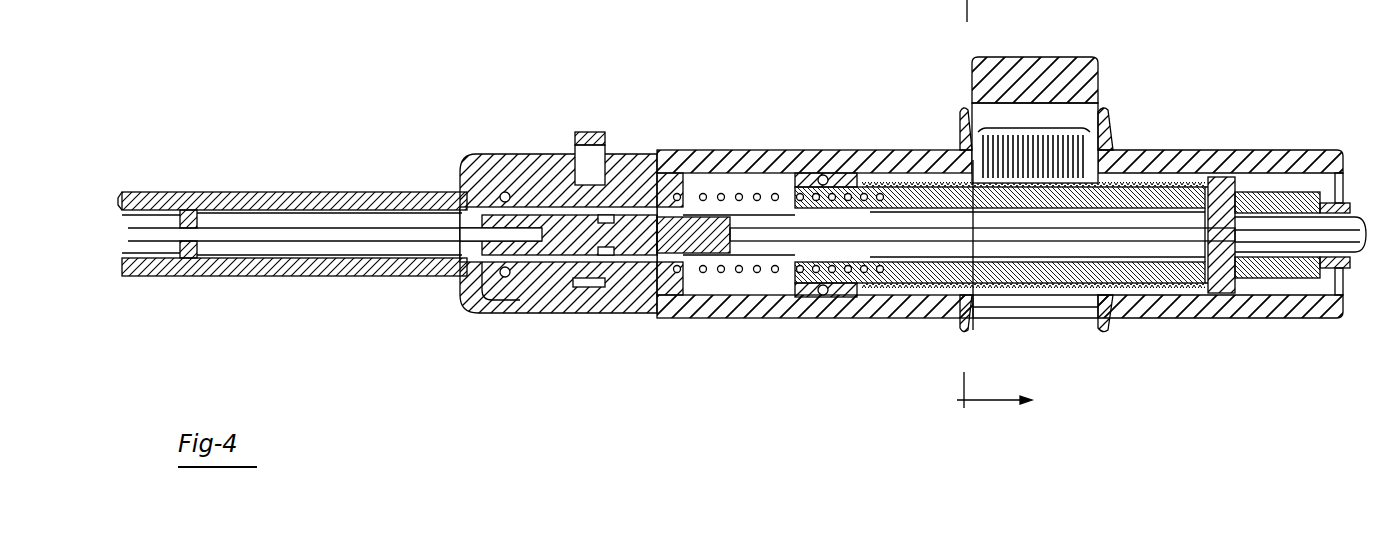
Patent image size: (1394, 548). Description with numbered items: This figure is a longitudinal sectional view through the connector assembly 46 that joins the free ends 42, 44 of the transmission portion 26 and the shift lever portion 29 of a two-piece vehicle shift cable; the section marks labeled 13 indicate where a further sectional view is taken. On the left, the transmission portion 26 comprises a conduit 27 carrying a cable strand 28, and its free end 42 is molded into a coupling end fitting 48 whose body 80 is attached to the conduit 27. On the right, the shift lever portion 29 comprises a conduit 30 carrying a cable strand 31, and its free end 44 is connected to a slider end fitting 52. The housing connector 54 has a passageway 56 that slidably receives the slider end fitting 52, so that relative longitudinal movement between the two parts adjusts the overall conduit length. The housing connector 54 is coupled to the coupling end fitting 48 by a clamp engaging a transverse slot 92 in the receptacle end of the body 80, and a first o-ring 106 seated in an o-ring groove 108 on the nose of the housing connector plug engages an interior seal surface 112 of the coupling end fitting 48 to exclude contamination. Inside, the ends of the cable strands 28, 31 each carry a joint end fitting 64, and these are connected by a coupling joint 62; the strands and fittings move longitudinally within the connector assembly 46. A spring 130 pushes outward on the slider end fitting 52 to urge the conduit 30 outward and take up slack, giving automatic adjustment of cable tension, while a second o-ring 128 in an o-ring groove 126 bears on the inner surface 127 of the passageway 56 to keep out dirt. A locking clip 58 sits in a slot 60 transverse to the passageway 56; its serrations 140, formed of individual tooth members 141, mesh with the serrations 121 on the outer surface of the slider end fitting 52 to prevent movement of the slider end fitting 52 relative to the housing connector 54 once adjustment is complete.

The transmission cable portion 26 is at (213, 305).
The conduit 27 is at (123, 193).
The cable strand 28 is at (162, 230).
The shift lever cable portion 29 is at (1218, 330).
The conduit 30 is at (1303, 222).
The cable strand 31 is at (1343, 233).
The free end of transmission portion 42 is at (127, 262).
The free end of shift lever portion 44 is at (1355, 248).
The connector assembly 46 is at (135, 414).
The coupling end fitting 48 is at (313, 277).
The slider end fitting 52 is at (1262, 195).
The housing connector 54 is at (1207, 176).
The passageway 56 is at (1133, 182).
The locking clip 58 is at (1075, 57).
The slot 60 is at (983, 300).
The coupling joint 62 is at (625, 297).
The joint end fitting 64 is at (468, 192).
The body 80 is at (330, 217).
The transverse slot 92 is at (590, 287).
The first o-ring 106 is at (498, 195).
The o-ring groove 108 is at (520, 287).
The interior seal surface 112 is at (517, 288).
The serrations 121 is at (1040, 297).
The o-ring groove 126 is at (833, 173).
The inner surface 127 is at (735, 195).
The second o-ring 128 is at (815, 192).
The spring 130 is at (655, 172).
The serrations 140 is at (1030, 128).
The tooth members 141 is at (965, 178).
The section line 13 is at (1018, 209).